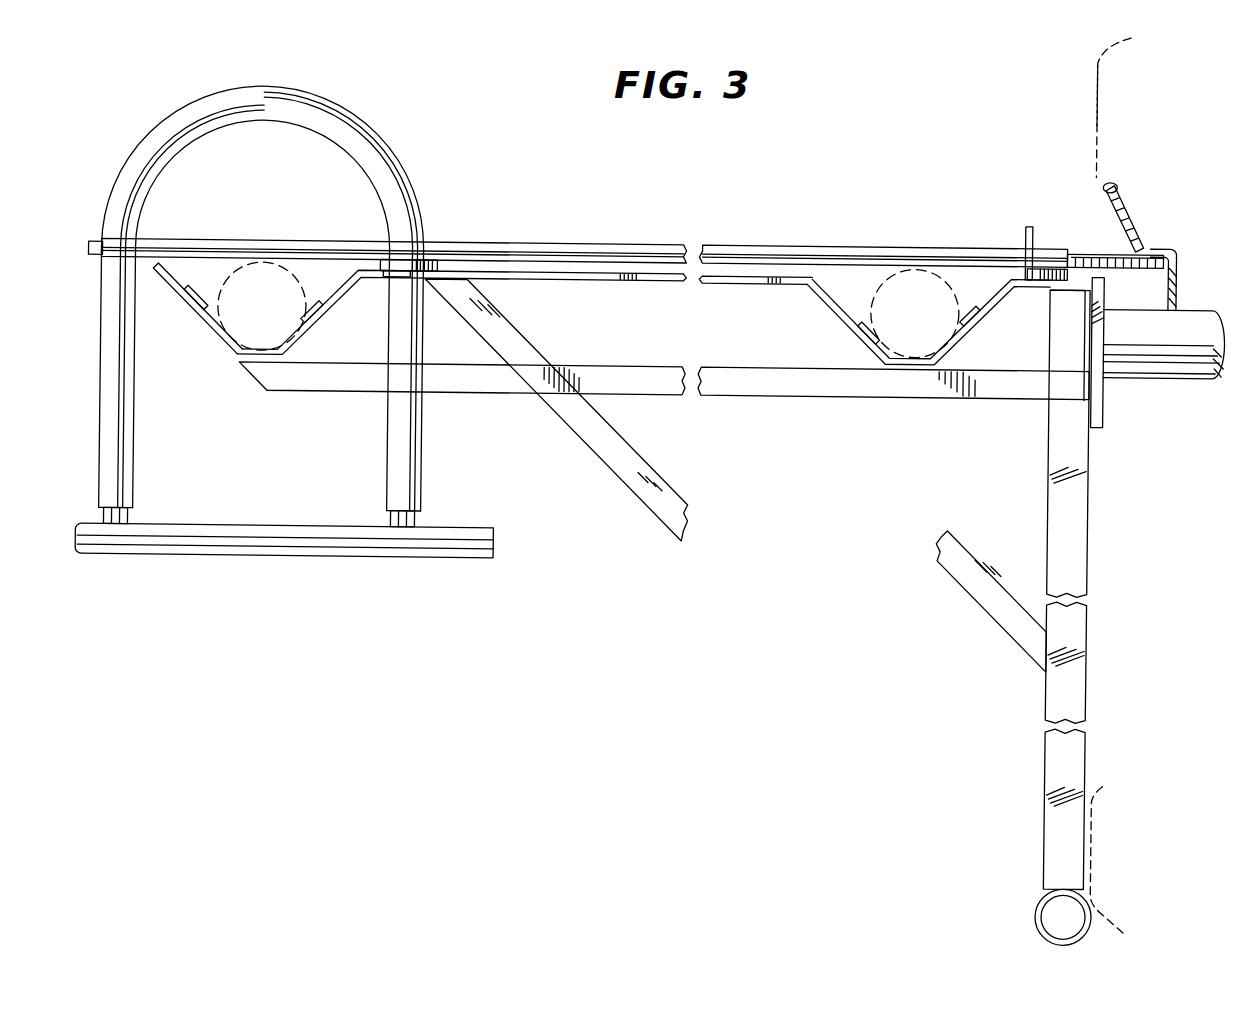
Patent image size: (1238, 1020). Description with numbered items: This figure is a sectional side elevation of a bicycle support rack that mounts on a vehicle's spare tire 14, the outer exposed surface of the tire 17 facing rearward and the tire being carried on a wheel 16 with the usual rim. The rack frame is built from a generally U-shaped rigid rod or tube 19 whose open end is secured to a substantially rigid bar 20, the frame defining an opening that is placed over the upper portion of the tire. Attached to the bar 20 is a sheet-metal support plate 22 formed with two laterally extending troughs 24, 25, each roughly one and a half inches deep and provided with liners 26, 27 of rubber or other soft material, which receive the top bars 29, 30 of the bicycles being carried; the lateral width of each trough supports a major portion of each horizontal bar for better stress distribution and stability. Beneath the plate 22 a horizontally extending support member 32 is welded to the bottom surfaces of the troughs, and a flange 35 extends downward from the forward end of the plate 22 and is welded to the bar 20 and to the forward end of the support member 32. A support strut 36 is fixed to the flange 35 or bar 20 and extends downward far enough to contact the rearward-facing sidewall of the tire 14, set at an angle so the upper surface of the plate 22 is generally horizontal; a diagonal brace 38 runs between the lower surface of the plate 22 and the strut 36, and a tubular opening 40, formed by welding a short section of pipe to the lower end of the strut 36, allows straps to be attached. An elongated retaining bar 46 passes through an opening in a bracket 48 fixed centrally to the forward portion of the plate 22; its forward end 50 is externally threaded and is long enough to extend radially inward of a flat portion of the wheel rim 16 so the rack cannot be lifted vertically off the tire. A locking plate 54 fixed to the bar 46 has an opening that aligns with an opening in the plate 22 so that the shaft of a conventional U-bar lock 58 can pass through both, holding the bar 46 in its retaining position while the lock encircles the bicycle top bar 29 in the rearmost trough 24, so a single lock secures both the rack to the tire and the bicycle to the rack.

The spare tire 14 is at (1080, 70).
The wheel 16 is at (1151, 244).
The outer exposed surface of the tire 17 is at (1091, 109).
The U-shaped rigid rod or tube 19 is at (1179, 373).
The rigid bar 20 is at (1107, 404).
The support plate 22 is at (785, 282).
The trough 24 is at (340, 288).
The trough 25 is at (830, 297).
The liner 26 is at (180, 302).
The liner 27 is at (982, 318).
The top bar 29 is at (215, 262).
The top bar 30 is at (954, 268).
The support member 32 is at (791, 397).
The flange 35 is at (1070, 335).
The support strut 36 is at (1092, 518).
The diagonal brace 38 is at (622, 480).
The tubular opening 40 is at (1043, 910).
The retaining bar 46 is at (523, 244).
The bracket 48 is at (1027, 221).
The threaded forward end 50 is at (1092, 246).
The locking plate 54 is at (437, 268).
The U-bar lock 58 is at (386, 150).